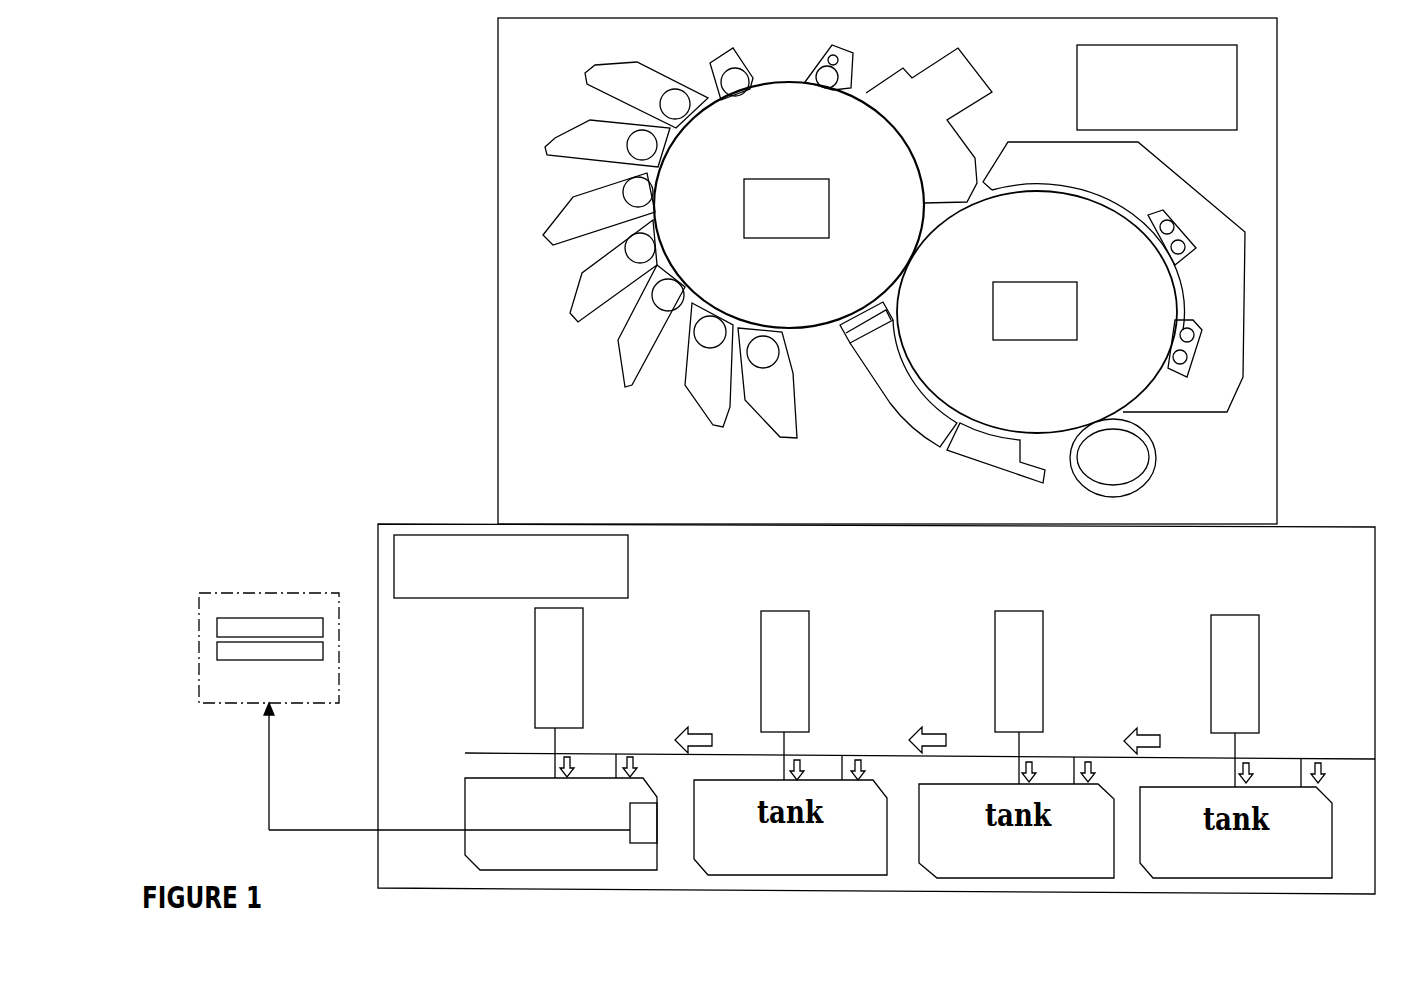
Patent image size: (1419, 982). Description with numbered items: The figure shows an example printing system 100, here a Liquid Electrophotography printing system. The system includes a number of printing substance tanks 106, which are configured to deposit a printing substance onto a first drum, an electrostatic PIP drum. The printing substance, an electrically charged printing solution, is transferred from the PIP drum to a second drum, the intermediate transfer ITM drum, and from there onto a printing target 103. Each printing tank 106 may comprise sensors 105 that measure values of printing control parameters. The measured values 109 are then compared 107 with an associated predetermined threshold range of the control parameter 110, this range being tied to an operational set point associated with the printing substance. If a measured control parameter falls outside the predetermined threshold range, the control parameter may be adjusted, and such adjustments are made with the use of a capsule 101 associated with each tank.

The printing system 100 is at (420, 102).
The capsule 101 is at (535, 643).
The printing target 103 is at (1156, 462).
The sensor 105 is at (653, 845).
The printing substance tank 106 is at (582, 273).
The comparison 107 is at (200, 602).
The measured values 109 is at (217, 626).
The predetermined threshold range of the control parameter 110 is at (217, 650).